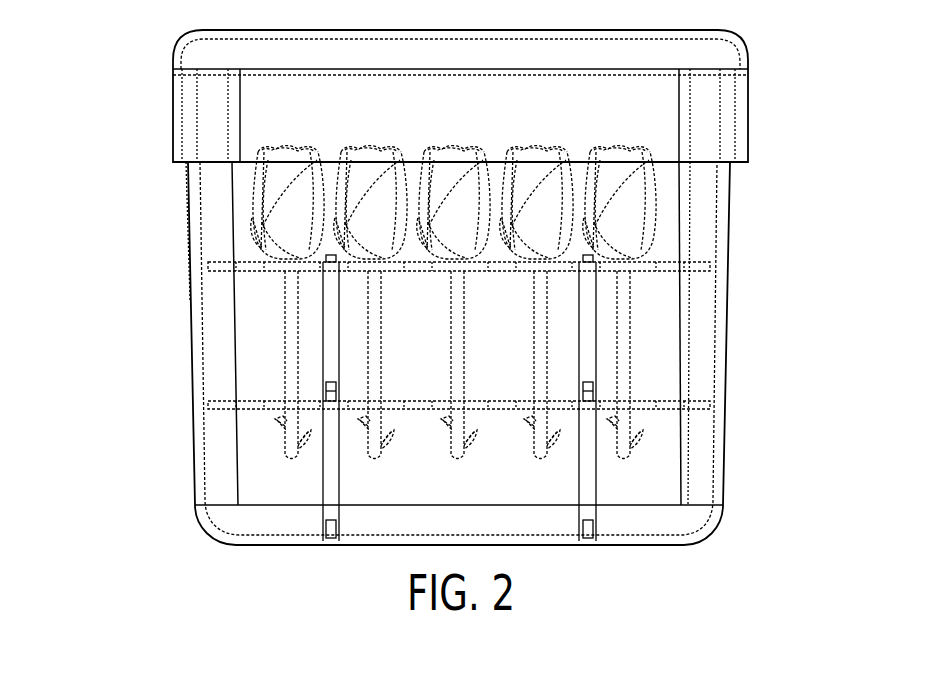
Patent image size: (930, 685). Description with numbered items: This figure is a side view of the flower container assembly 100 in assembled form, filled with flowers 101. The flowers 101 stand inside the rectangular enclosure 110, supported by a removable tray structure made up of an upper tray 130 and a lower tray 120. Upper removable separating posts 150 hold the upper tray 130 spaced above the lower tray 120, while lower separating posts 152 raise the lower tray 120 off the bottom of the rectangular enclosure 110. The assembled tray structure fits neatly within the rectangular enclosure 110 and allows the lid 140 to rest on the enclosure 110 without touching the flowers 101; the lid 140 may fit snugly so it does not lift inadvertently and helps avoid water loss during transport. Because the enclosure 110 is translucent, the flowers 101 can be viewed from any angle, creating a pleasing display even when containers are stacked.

The flower container assembly 100 is at (103, 103).
The flowers 101 is at (282, 175).
The rectangular enclosure 110 is at (191, 342).
The lower tray 120 is at (718, 402).
The upper tray 130 is at (708, 263).
The lid 140 is at (742, 52).
The upper removable separating posts 150 is at (328, 340).
The lower separating posts 152 is at (328, 468).